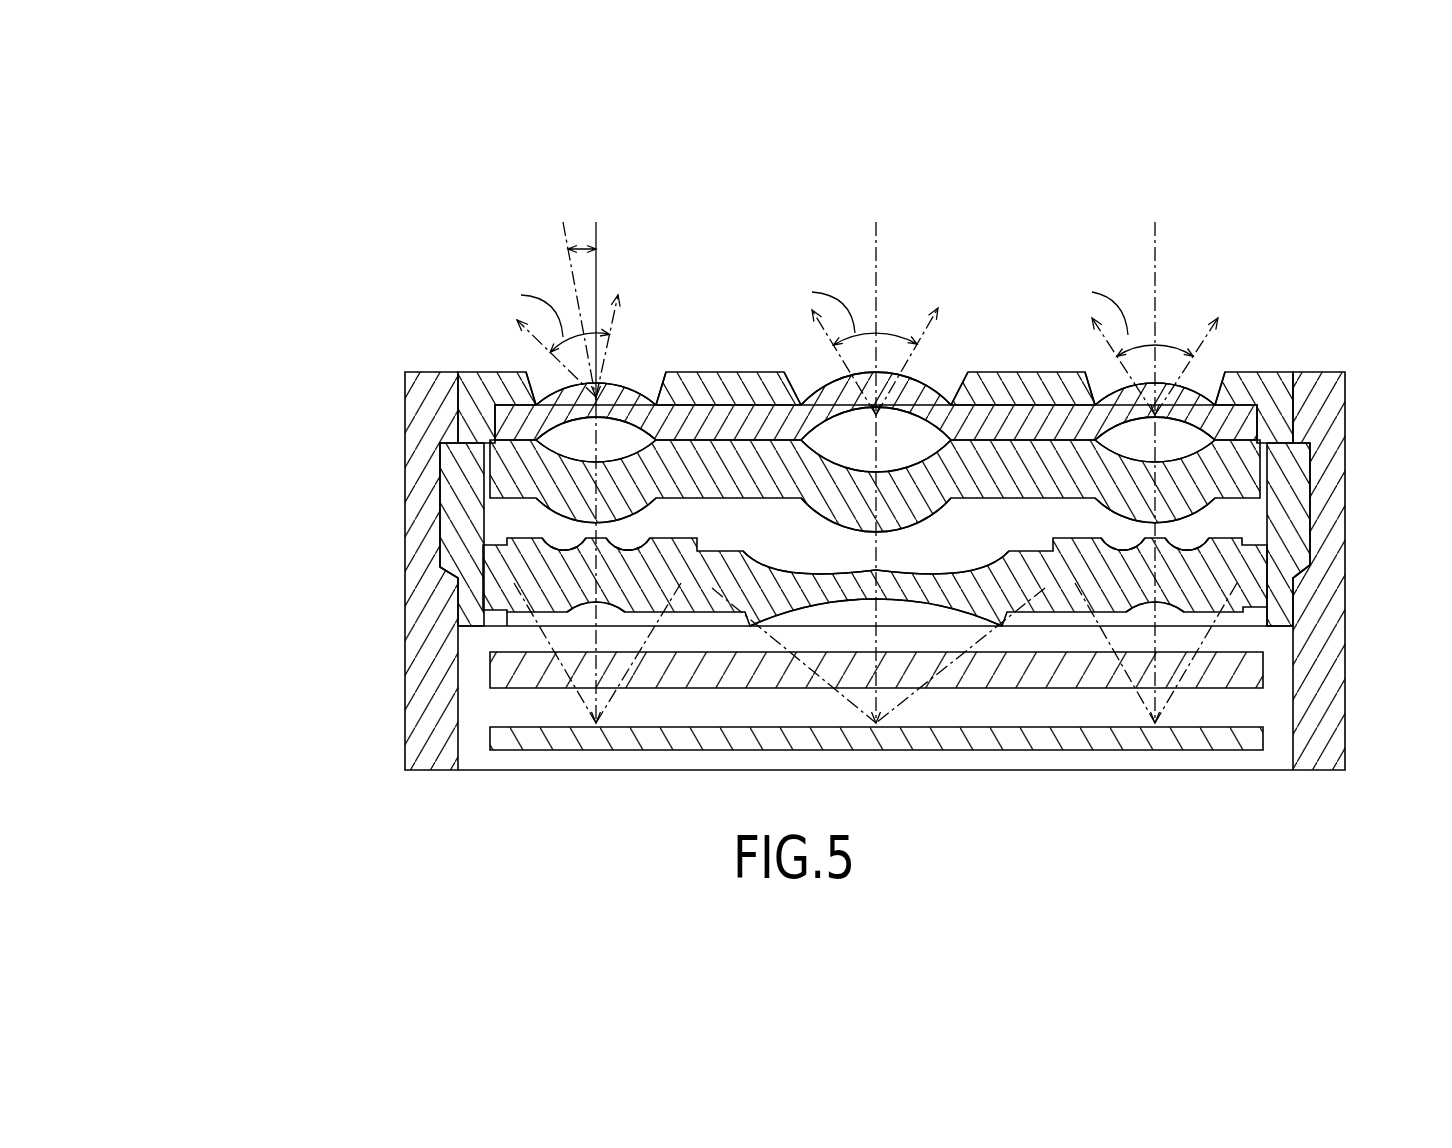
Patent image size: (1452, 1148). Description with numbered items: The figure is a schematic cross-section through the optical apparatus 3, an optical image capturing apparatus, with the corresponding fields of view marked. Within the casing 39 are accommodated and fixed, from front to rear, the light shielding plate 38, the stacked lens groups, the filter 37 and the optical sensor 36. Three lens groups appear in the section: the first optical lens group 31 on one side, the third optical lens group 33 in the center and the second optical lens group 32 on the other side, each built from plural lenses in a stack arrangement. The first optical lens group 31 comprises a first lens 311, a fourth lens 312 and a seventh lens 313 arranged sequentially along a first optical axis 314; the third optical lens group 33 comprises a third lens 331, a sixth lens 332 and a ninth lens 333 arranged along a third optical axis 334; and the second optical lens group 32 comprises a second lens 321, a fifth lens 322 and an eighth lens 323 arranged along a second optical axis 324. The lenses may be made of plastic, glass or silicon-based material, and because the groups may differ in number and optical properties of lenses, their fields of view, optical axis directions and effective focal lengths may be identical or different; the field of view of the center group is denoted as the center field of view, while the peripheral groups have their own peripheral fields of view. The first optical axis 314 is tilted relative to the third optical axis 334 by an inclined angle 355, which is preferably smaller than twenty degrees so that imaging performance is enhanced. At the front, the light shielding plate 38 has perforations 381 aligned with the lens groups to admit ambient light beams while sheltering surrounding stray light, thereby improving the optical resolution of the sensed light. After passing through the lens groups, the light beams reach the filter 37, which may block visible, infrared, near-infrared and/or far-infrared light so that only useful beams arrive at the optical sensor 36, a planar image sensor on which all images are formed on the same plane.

The optical apparatus 3 is at (795, 474).
The first optical lens group 31 is at (211, 132).
The first lens 311 is at (625, 378).
The fourth lens 312 is at (584, 512).
The seventh lens 313 is at (578, 578).
The first optical axis 314 is at (570, 265).
The second optical lens group 32 is at (335, 132).
The second lens 321 is at (1187, 378).
The fifth lens 322 is at (1168, 512).
The eighth lens 323 is at (1180, 573).
The second optical axis 324 is at (1157, 275).
The third optical lens group 33 is at (460, 132).
The third lens 331 is at (917, 375).
The sixth lens 332 is at (827, 507).
The ninth lens 333 is at (950, 602).
The third optical axis 334 is at (876, 275).
The inclined angle 355 is at (580, 243).
The optical sensor 36 is at (1197, 737).
The filter 37 is at (787, 672).
The light shielding plate 38 is at (1288, 376).
The perforations 381 is at (545, 372).
The casing 39 is at (1335, 610).